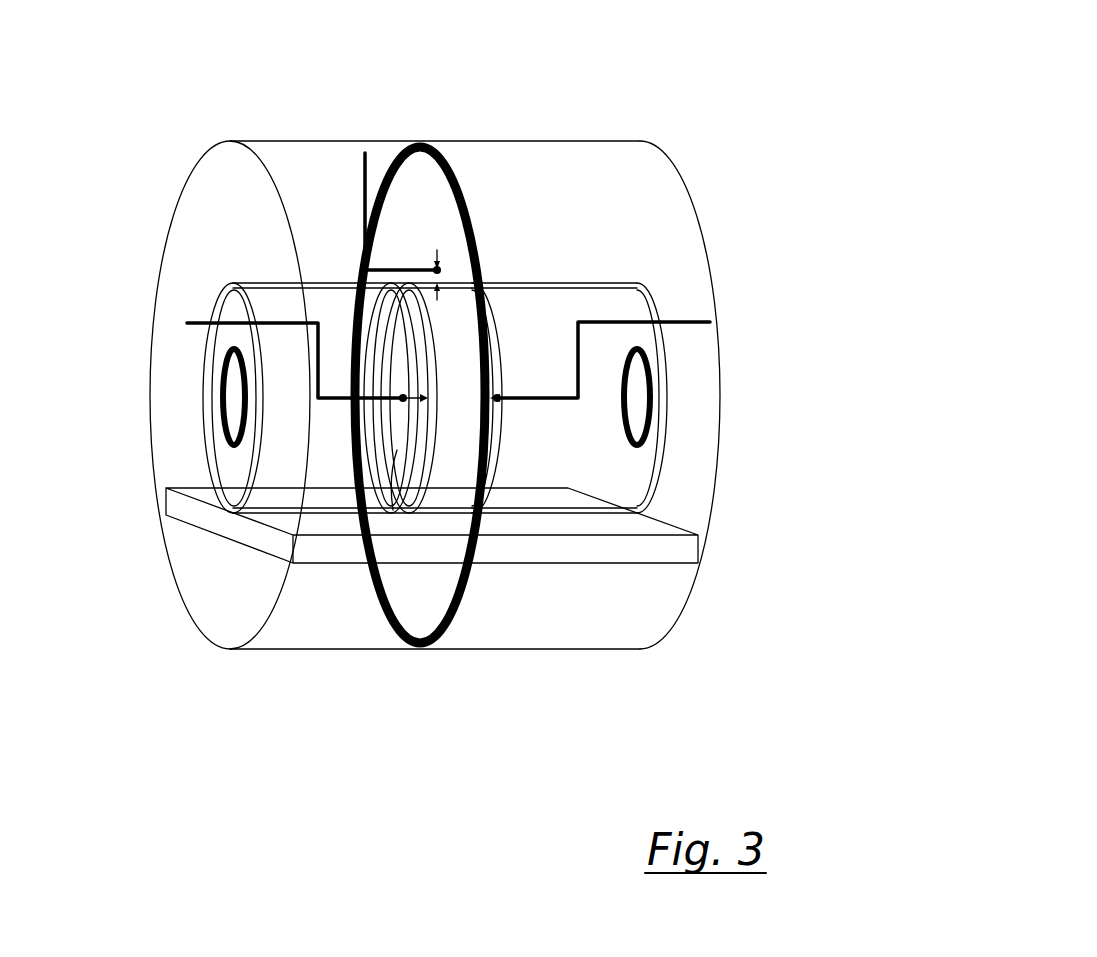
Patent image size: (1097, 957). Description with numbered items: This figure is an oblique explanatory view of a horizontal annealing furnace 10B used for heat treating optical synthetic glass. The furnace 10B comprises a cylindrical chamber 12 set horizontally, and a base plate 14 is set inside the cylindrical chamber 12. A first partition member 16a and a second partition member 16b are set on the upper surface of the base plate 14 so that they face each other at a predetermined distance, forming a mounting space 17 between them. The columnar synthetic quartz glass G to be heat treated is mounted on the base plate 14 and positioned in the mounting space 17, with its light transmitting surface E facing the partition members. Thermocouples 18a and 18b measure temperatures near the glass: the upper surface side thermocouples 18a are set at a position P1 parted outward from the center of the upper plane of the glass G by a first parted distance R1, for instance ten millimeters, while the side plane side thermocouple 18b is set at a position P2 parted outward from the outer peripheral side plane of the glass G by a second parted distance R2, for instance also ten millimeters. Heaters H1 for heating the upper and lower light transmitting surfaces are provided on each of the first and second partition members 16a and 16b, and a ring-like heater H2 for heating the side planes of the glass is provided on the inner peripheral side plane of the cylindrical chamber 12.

The horizontal annealing furnace 10B is at (720, 108).
The cylindrical chamber 12 is at (690, 350).
The base plate 14 is at (668, 548).
The first partition member 16a is at (267, 303).
The second partition member 16b is at (569, 356).
The mounting space 17 is at (496, 433).
The upper surface side thermocouple 18a is at (197, 321).
The side plane side thermocouple 18b is at (367, 165).
The heater H1 is at (222, 371).
The ring-like heater H2 is at (380, 607).
The light transmitting surface E is at (438, 633).
The columnar synthetic quartz glass G is at (455, 445).
The temperature measuring position P1 is at (500, 396).
The temperature measuring position P2 is at (440, 268).
The first parted distance R1 is at (410, 396).
The second parted distance R2 is at (432, 272).